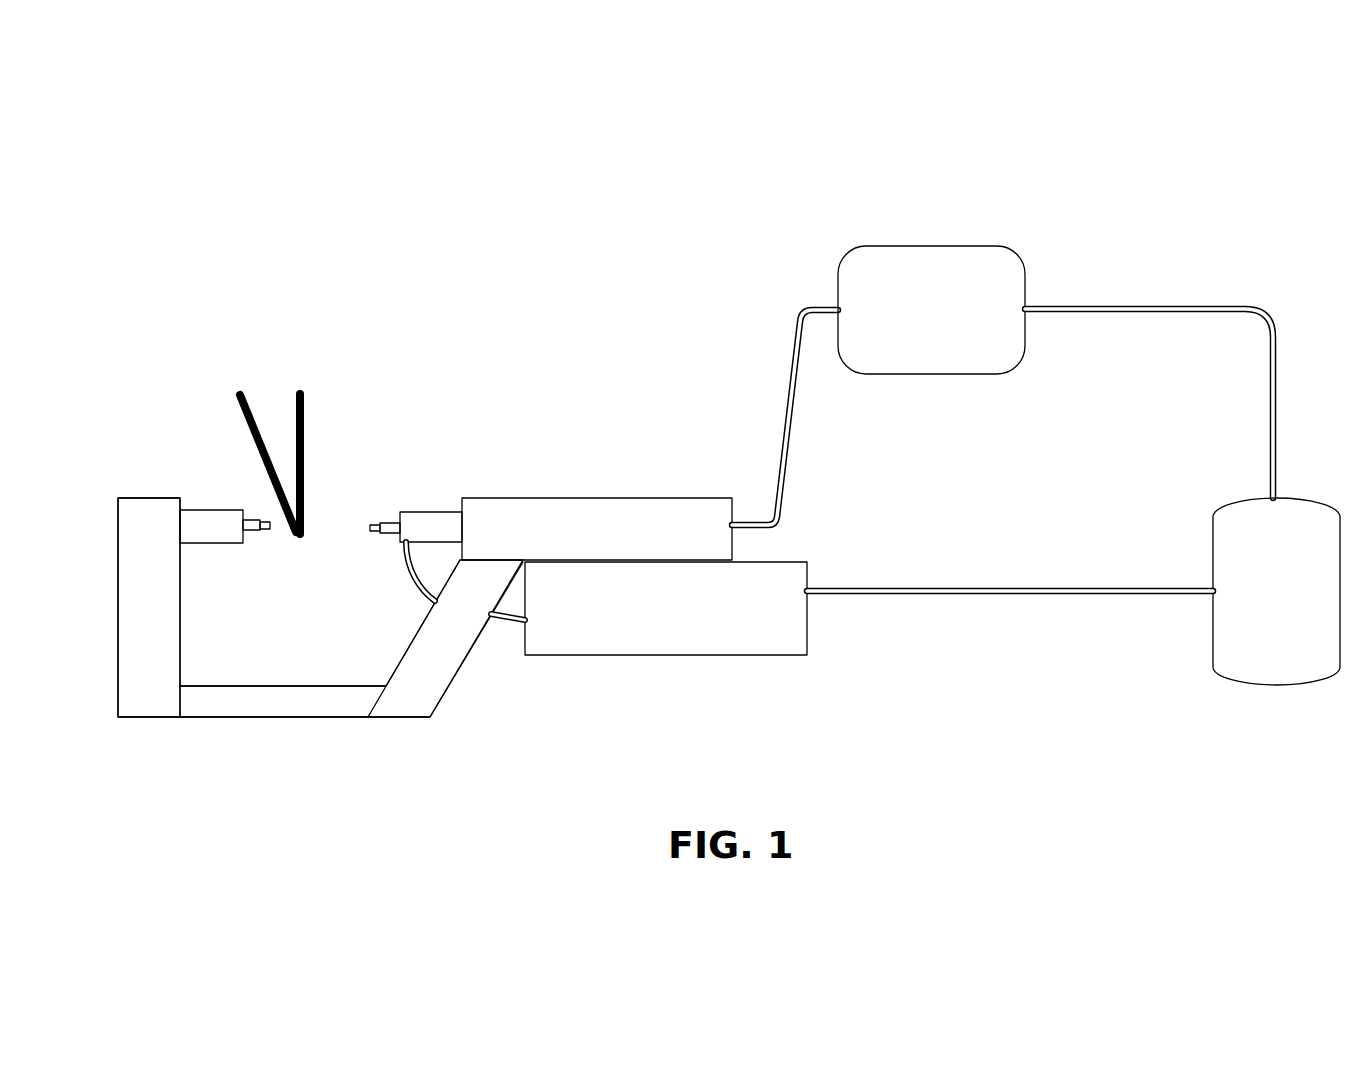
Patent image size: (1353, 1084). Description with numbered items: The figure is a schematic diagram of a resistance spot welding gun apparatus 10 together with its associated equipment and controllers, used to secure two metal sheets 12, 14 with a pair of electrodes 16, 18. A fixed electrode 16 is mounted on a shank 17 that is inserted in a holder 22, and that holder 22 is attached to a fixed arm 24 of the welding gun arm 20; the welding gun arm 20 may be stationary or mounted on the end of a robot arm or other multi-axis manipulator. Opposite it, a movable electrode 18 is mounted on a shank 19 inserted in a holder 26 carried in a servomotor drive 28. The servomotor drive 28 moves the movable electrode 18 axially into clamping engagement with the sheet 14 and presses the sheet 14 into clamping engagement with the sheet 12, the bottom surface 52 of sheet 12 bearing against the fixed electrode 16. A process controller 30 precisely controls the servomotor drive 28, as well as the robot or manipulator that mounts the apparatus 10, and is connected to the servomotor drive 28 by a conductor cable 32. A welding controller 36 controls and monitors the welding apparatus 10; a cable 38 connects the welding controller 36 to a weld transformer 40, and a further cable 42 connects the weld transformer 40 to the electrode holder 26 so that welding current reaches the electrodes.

The spot welding gun apparatus 10 is at (606, 238).
The metal sheet 12 is at (238, 392).
The metal sheet 14 is at (301, 391).
The fixed electrode 16 is at (263, 520).
The shank 17 is at (250, 512).
The movable electrode 18 is at (370, 524).
The shank 19 is at (388, 520).
The welding gun arm 20 is at (323, 695).
The holder 22 is at (187, 516).
The fixed arm 24 is at (142, 697).
The holder 26 is at (427, 517).
The servomotor drive 28 is at (578, 500).
The process controller 30 is at (877, 260).
The conductor cable 32 is at (787, 416).
The welding controller 36 is at (1237, 530).
The cable 38 is at (1087, 588).
The weld transformer 40 is at (727, 655).
The cable 42 is at (430, 598).
The bottom surface 52 is at (272, 529).